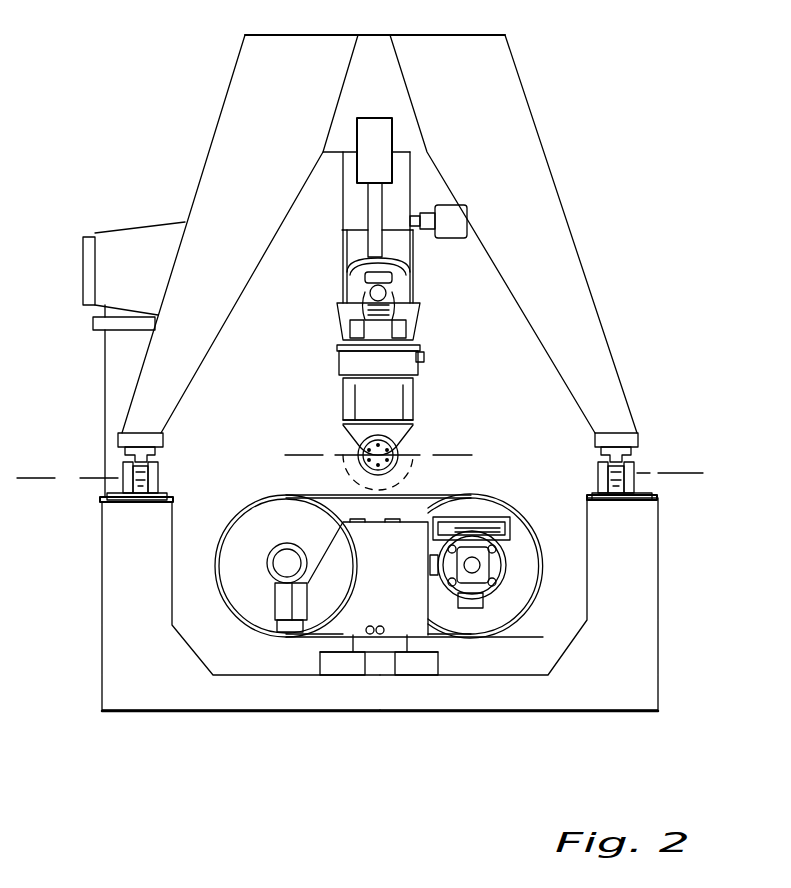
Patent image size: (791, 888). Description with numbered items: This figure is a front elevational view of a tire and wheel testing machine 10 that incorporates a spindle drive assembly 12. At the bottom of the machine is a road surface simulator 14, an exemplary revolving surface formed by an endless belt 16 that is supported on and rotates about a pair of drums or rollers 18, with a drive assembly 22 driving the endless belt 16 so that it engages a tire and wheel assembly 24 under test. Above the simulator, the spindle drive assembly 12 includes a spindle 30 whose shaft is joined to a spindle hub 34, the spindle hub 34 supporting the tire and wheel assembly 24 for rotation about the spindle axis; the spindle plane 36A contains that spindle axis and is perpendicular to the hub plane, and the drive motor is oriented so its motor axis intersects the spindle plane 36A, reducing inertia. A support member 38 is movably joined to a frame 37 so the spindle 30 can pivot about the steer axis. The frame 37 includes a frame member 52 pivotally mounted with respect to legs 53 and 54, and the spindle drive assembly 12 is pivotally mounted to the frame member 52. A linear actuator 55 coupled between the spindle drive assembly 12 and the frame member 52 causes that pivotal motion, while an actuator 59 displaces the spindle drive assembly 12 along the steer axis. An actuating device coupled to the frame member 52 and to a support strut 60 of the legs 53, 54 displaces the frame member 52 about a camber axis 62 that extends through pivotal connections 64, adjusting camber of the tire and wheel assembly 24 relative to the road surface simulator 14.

The tire and wheel testing machine 10 is at (622, 193).
The spindle drive assembly 12 is at (331, 209).
The road surface simulator 14 is at (503, 491).
The endless belt 16 is at (310, 493).
The drums or rollers 18 is at (243, 546).
The drive assembly 22 is at (523, 547).
The tire and wheel assembly 24 is at (410, 430).
The spindle 30 is at (360, 430).
The spindle hub 34 is at (357, 448).
The spindle plane 36A is at (452, 455).
The frame 37 is at (135, 114).
The support member 38 is at (343, 288).
The frame member 52 is at (533, 118).
The leg 53 is at (658, 535).
The leg 54 is at (102, 558).
The linear actuator 55 is at (455, 238).
The actuator 59 is at (392, 128).
The support strut 60 is at (135, 228).
The camber axis 62 is at (37, 478).
The pivotal connections 64 is at (123, 465).